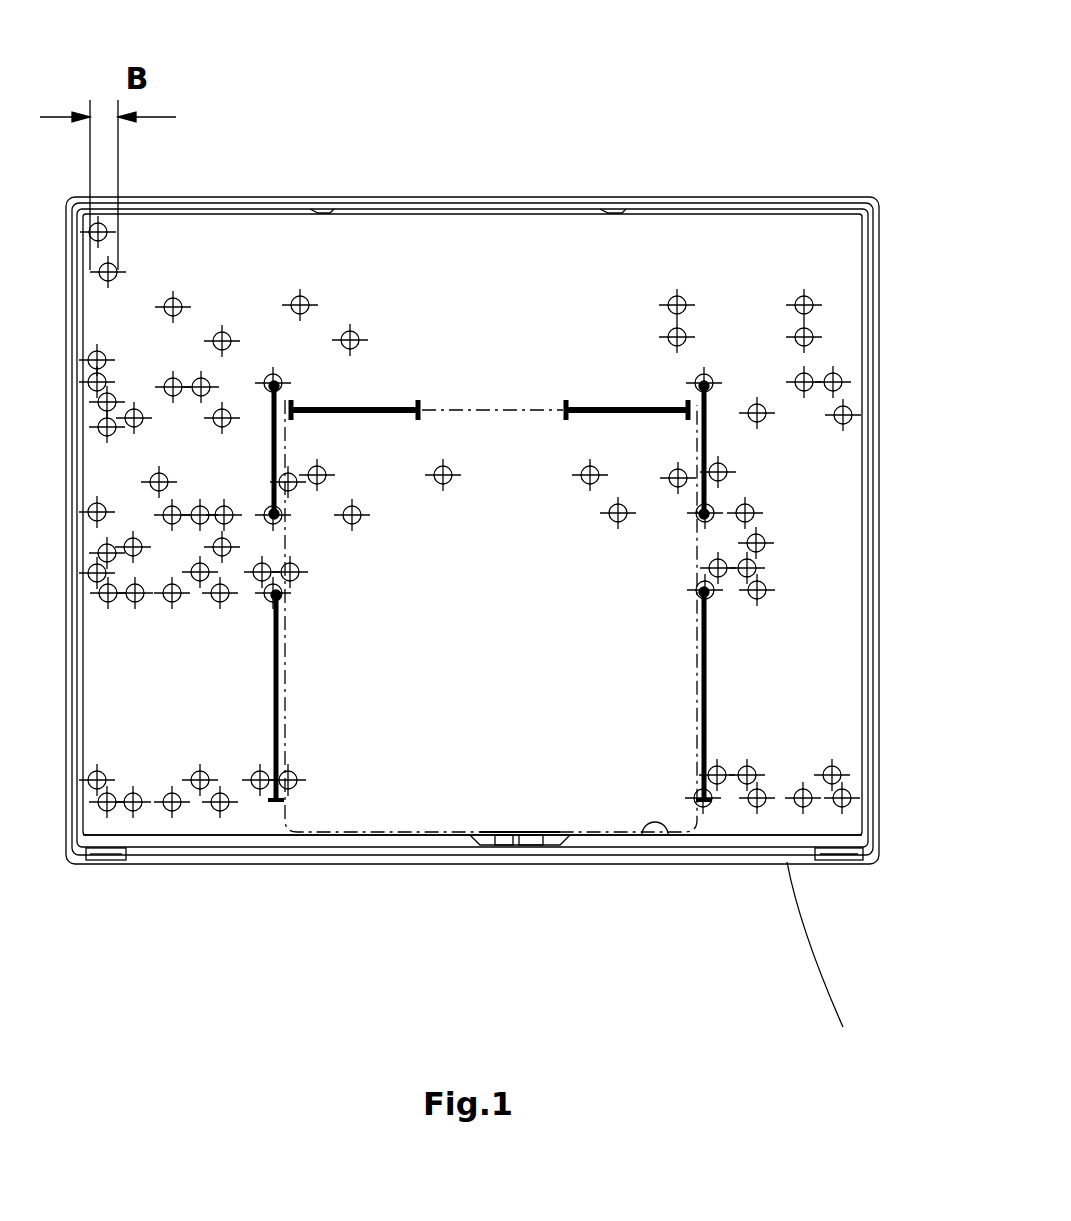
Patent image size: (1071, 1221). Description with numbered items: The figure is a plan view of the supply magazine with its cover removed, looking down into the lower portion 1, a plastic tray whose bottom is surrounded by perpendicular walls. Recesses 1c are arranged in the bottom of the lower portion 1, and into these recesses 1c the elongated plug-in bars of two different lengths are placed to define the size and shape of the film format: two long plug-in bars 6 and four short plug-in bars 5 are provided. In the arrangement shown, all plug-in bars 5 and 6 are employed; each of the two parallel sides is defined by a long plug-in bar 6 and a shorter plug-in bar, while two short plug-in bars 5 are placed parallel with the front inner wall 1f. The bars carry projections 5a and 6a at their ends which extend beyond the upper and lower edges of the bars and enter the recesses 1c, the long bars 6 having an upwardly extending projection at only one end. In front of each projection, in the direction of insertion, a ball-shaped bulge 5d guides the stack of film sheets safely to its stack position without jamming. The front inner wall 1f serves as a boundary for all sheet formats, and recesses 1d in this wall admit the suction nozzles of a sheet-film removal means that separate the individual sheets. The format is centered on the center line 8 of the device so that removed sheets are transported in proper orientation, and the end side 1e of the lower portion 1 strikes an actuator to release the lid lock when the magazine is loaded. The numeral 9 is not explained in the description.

The lower portion 1 is at (224, 866).
The recesses 1c is at (700, 587).
The recesses 1d is at (480, 862).
The end side 1e is at (105, 865).
The front inner wall 1f is at (640, 838).
The plug-in bars 5 is at (697, 385).
The projections 5a is at (560, 422).
The bulge 5d is at (703, 513).
The plug-in bars 6 is at (283, 803).
The projections 6a is at (278, 597).
The center line 8 is at (520, 950).
The centerline 9 is at (450, 410).